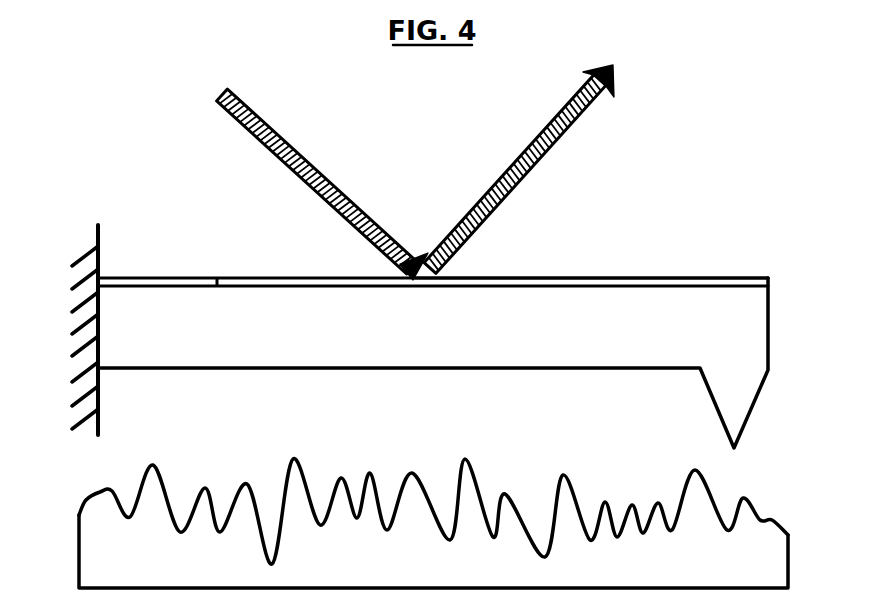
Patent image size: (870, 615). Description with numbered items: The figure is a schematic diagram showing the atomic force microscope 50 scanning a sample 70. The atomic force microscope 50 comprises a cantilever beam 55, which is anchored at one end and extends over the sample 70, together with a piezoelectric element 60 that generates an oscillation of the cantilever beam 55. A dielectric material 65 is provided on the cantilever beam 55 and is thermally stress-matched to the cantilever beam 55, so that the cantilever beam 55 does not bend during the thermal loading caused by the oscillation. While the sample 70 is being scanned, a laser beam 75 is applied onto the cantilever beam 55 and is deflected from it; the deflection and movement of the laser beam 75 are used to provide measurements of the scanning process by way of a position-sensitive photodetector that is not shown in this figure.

The atomic force microscope 50 is at (835, 270).
The cantilever beam 55 is at (588, 367).
The piezoelectric element 60 is at (166, 282).
The dielectric material 65 is at (546, 282).
The sample 70 is at (90, 556).
The laser beam 75 is at (220, 96).